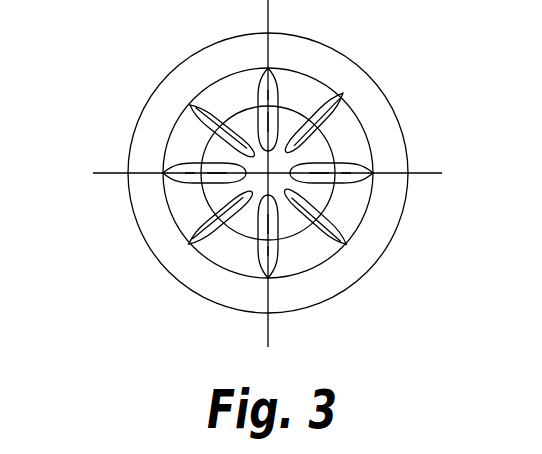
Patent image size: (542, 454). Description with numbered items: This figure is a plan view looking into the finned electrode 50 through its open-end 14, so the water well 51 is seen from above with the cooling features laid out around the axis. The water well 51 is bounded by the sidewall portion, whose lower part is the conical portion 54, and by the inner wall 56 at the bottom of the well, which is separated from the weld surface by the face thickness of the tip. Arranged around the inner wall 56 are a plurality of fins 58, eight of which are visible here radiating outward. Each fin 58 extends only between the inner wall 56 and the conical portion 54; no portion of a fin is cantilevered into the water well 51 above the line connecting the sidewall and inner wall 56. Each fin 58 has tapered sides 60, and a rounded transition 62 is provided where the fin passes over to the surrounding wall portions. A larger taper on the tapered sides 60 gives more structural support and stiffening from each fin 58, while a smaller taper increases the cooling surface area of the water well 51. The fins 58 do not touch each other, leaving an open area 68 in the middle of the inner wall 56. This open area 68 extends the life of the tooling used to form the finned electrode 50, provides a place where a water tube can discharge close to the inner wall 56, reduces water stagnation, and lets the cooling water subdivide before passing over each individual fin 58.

The finned electrode 50 is at (134, 33).
The open-end 14 is at (368, 240).
The water well 51 is at (305, 259).
The conical portion 54 is at (350, 203).
The inner wall 56 is at (323, 153).
The fins 58 is at (328, 118).
The tapered sides 60 is at (307, 117).
The rounded transition 62 is at (253, 147).
The open area 68 is at (238, 185).